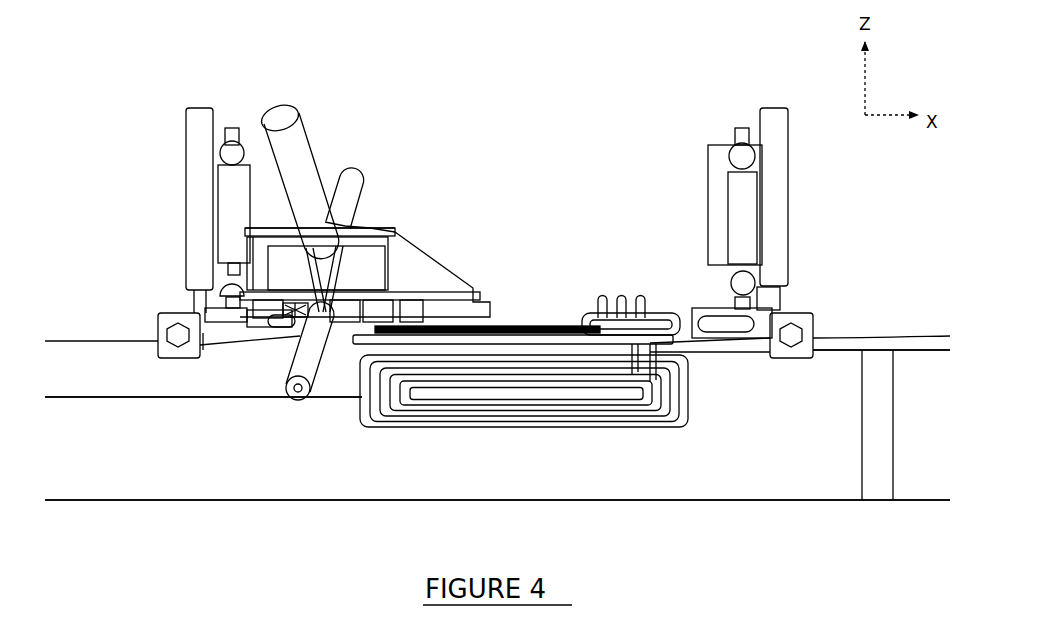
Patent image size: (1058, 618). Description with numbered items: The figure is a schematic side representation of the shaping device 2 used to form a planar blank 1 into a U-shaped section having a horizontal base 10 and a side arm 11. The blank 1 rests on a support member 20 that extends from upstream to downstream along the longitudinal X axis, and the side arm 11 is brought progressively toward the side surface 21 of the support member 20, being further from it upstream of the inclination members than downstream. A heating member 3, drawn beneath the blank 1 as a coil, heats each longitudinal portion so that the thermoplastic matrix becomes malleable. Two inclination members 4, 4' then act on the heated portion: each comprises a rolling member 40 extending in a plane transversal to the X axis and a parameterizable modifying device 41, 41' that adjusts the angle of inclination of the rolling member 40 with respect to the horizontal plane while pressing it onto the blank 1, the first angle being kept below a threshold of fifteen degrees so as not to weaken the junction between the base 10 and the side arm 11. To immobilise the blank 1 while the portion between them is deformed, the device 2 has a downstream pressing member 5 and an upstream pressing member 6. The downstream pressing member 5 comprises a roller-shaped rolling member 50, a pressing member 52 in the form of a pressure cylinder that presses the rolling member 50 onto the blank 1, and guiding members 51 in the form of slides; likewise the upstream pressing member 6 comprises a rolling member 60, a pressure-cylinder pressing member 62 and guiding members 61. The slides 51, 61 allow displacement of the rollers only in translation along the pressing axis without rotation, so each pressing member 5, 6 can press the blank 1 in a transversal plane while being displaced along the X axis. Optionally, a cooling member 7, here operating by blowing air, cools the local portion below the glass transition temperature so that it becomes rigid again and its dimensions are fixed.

The blank 1 is at (63, 285).
The shaping device 2 is at (631, 99).
The heating member 3 is at (565, 423).
The inclination member 4 is at (359, 260).
The inclination member 4' is at (398, 194).
The downstream pressing member 5 is at (747, 100).
The upstream pressing member 6 is at (172, 105).
The cooling member 7 is at (299, 326).
The horizontal base 10 is at (118, 341).
The left side arm 11 is at (122, 368).
The support member 20 is at (482, 462).
The side surface 21 is at (713, 407).
The rolling member 40 is at (298, 390).
The parameterizable modifying device 41 is at (283, 154).
The parameterizable modifying device 41' is at (394, 193).
The rolling member 50 is at (755, 330).
The guiding member 51 is at (767, 217).
The pressing member 52 is at (745, 195).
The rolling member 60 is at (213, 336).
The guiding member 61 is at (189, 172).
The pressing member 62 is at (222, 238).